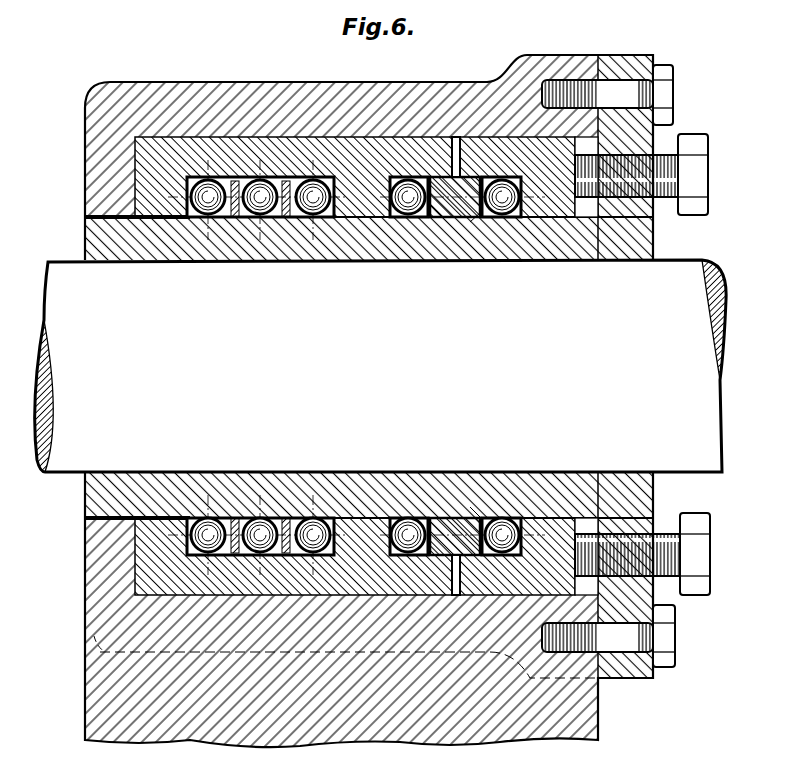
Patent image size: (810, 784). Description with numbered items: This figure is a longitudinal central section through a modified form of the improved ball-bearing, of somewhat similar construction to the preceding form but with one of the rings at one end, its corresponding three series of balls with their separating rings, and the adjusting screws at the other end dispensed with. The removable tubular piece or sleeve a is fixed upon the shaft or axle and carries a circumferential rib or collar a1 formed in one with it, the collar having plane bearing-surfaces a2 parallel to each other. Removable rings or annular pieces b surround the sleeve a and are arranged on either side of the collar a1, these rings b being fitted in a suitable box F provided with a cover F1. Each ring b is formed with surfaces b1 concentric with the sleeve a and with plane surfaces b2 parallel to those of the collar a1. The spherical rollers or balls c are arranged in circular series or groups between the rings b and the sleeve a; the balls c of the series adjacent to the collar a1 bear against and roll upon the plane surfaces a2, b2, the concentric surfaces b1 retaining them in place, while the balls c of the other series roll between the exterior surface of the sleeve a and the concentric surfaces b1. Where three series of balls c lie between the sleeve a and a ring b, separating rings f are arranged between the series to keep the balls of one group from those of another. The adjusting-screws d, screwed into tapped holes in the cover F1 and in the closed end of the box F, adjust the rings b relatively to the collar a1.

The box F is at (369, 401).
The cover F1 is at (625, 366).
The tubular piece or sleeve a is at (369, 367).
The rib or collar a1 is at (455, 366).
The plane bearing-surfaces a2 is at (465, 365).
The rings or annular pieces b is at (355, 366).
The concentric surfaces b1 is at (222, 178).
The plane surfaces b2 is at (186, 185).
The spherical rollers or balls c is at (356, 367).
The adjusting-screws d is at (708, 177).
The separating rings f is at (286, 180).